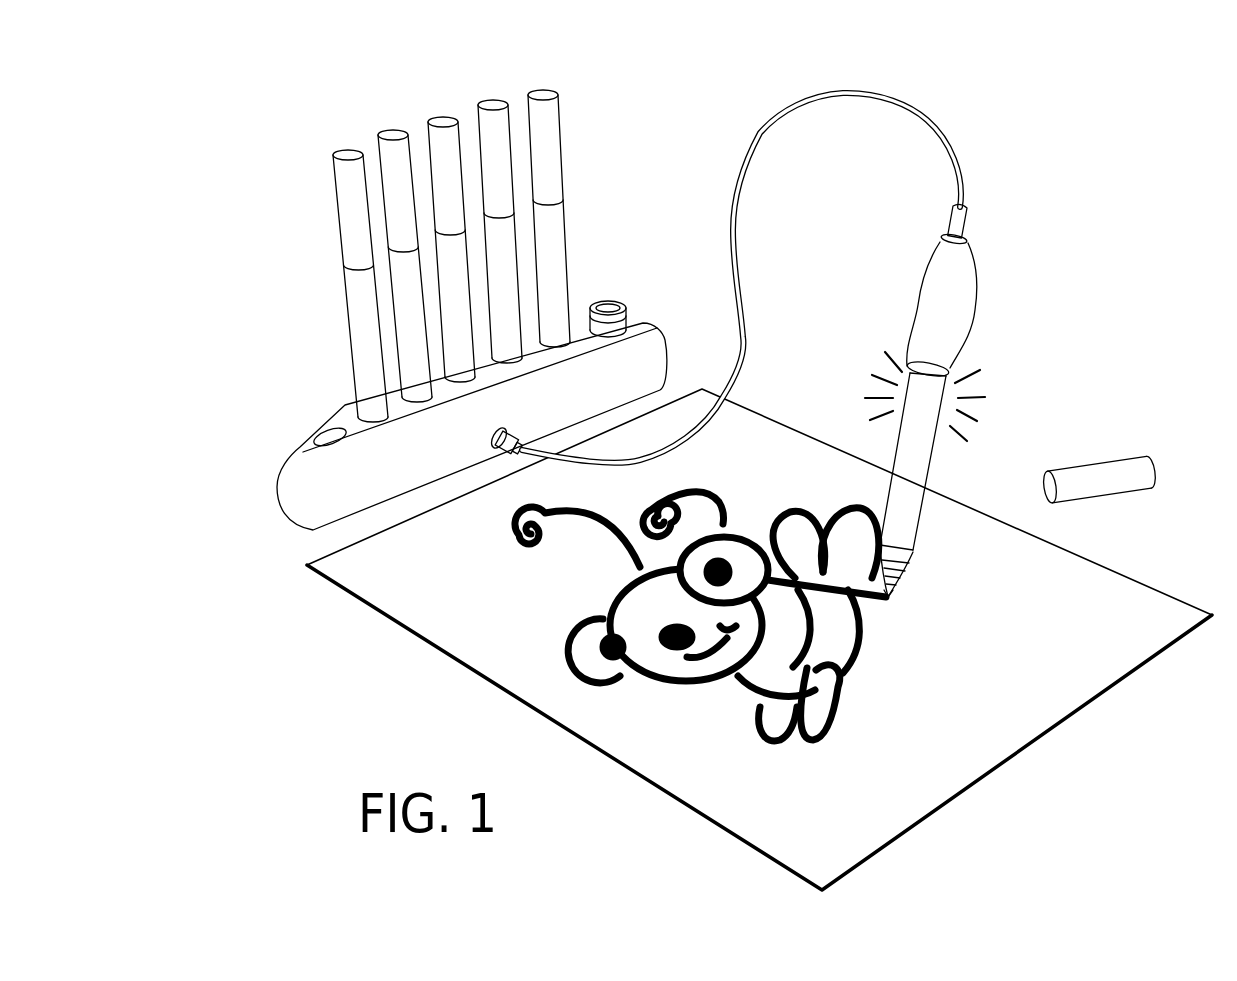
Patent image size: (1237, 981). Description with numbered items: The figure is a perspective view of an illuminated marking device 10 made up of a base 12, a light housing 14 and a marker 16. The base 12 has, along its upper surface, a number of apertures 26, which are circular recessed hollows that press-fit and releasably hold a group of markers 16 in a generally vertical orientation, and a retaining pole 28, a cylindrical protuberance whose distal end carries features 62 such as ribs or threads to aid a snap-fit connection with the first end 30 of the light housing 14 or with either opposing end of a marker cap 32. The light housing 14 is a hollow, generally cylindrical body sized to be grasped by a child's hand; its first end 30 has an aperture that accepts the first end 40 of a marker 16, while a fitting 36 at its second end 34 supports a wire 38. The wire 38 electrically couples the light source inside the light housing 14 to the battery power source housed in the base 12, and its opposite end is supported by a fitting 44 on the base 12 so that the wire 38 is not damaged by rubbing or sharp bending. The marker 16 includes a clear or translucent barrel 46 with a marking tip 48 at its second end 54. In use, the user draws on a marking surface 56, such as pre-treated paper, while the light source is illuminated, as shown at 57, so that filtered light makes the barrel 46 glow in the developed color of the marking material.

The illuminated marking device 10 is at (1146, 268).
The base 12 is at (283, 512).
The light housing 14 is at (968, 298).
The marker 16 is at (583, 222).
The apertures 26 is at (302, 437).
The retaining pole 28 is at (622, 320).
The first end 30 is at (950, 370).
The cap 32 is at (348, 149).
The second end 34 is at (945, 240).
The fitting 36 is at (968, 217).
The wire 38 is at (845, 95).
The first end 40 is at (946, 392).
The fitting 44 is at (514, 437).
The barrel 46 is at (558, 242).
The marking tip 48 is at (890, 599).
The second end 54 is at (905, 566).
The marking surface 56 is at (432, 645).
The illumination 57 is at (880, 377).
The features 62 is at (593, 312).